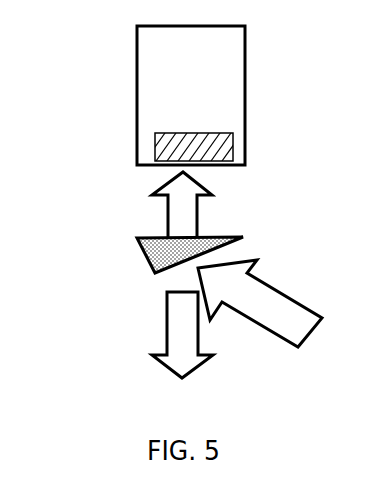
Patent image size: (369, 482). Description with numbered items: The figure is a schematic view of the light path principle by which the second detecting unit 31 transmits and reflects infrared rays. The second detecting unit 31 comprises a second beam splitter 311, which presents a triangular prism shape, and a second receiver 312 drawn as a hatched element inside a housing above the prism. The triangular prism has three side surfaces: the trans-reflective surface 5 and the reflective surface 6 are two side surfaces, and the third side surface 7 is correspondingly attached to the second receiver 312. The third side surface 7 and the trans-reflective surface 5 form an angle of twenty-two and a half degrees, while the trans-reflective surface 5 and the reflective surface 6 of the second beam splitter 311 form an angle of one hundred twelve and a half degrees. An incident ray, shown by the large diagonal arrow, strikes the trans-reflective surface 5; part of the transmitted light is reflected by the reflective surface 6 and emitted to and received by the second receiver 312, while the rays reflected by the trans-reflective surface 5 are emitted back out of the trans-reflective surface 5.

The second detecting unit 31 is at (245, 87).
The second receiver 312 is at (187, 147).
The second beam splitter 311 is at (165, 257).
The trans-reflective surface 5 is at (244, 242).
The reflective surface 6 is at (140, 250).
The third side surface 7 is at (227, 236).